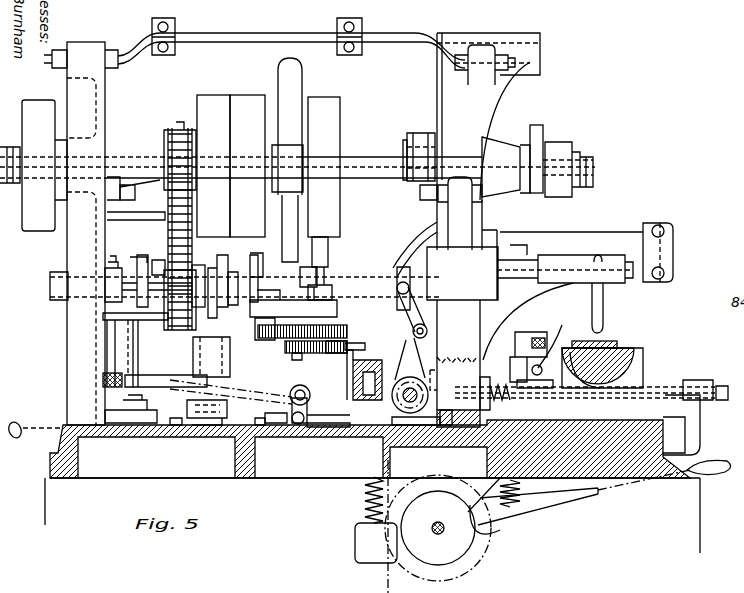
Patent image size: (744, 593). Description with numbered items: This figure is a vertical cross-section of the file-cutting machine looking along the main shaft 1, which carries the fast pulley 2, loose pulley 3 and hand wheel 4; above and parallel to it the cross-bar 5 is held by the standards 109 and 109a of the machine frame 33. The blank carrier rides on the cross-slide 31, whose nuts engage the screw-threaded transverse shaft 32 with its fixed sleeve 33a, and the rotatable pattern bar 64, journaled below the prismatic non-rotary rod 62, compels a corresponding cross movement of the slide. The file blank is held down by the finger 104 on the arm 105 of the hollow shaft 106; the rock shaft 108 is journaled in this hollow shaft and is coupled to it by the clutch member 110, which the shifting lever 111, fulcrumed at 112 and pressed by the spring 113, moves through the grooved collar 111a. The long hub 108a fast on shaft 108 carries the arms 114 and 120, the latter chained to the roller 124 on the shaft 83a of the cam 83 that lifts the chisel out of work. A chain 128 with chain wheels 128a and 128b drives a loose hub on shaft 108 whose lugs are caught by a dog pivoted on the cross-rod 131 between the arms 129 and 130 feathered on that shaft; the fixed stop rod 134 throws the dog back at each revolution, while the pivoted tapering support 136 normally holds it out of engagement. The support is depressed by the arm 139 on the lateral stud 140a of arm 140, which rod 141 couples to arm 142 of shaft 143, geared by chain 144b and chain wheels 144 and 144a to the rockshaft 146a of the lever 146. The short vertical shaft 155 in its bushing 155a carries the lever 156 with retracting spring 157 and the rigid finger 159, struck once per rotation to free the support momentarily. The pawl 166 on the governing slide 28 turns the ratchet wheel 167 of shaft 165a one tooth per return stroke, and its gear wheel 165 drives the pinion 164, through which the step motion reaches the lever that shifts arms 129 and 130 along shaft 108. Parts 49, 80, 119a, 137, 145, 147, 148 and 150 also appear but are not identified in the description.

The main shaft 1 is at (297, 167).
The fast pulley 2 is at (207, 97).
The loose pulley 3 is at (243, 97).
The hand wheel 4 is at (300, 84).
The cross-bar 5 is at (238, 32).
The governing slide 28 is at (306, 412).
The cross-slide 31 is at (643, 362).
The screw-threaded transverse shaft 32 is at (728, 384).
The machine frame 33 is at (478, 400).
The fixed sleeve 33a is at (700, 380).
The bracket 49 is at (700, 412).
The prismatic non-rotary rod 62 is at (535, 332).
The pattern bar 64 is at (560, 342).
The coupling 80 is at (560, 142).
The cam 83 is at (536, 125).
The cam shaft 83a is at (405, 157).
The finger 104 is at (603, 320).
The arm 105 is at (570, 283).
The hollow shaft 106 is at (455, 363).
The rock shaft 108 is at (50, 286).
The sleeve or long hub 108a is at (428, 284).
The standard 109 is at (104, 233).
The standard 109a is at (488, 141).
The clutch member 110 is at (402, 310).
The shifting lever 111 is at (416, 338).
The grooved collar 111a is at (339, 290).
The fulcrum 112 is at (428, 334).
The spring 113 is at (483, 365).
The arm 114 is at (297, 360).
The rod 119a is at (319, 272).
The arm 120 is at (397, 252).
The roller 124 is at (420, 133).
The chain 128 is at (165, 232).
The chain wheel 128a is at (186, 328).
The chain wheel 128b is at (178, 128).
The arm 129 is at (116, 256).
The arm 130 is at (224, 255).
The cross-rod 131 is at (200, 264).
The stop rod 134 is at (128, 185).
The pivoted tapering support 136 is at (193, 425).
The pin 137 is at (176, 437).
The arm 139 is at (268, 388).
The arm 140 is at (300, 437).
The lateral stud 140a is at (310, 394).
The rod 141 is at (344, 437).
The arm 142 is at (413, 437).
The shaft 143 is at (445, 437).
The chain wheel 144 is at (424, 578).
The chain wheel 144a is at (366, 437).
The chain 144b is at (500, 530).
The spring 145 is at (366, 499).
The lever 146 is at (552, 512).
The rockshaft 146a is at (440, 534).
The slide 147 is at (385, 385).
The roller 148 is at (413, 377).
The post 150 is at (140, 322).
The short vertical shaft 155 is at (130, 352).
The bushing 155a is at (140, 378).
The lever 156 is at (133, 425).
The retracting spring 157 is at (103, 376).
The rigid finger 159 is at (107, 317).
The pinion 164 is at (270, 305).
The gear wheel 165 is at (348, 329).
The shaft 165a is at (337, 341).
The pawl 166 is at (366, 346).
The ratchet wheel 167 is at (316, 353).